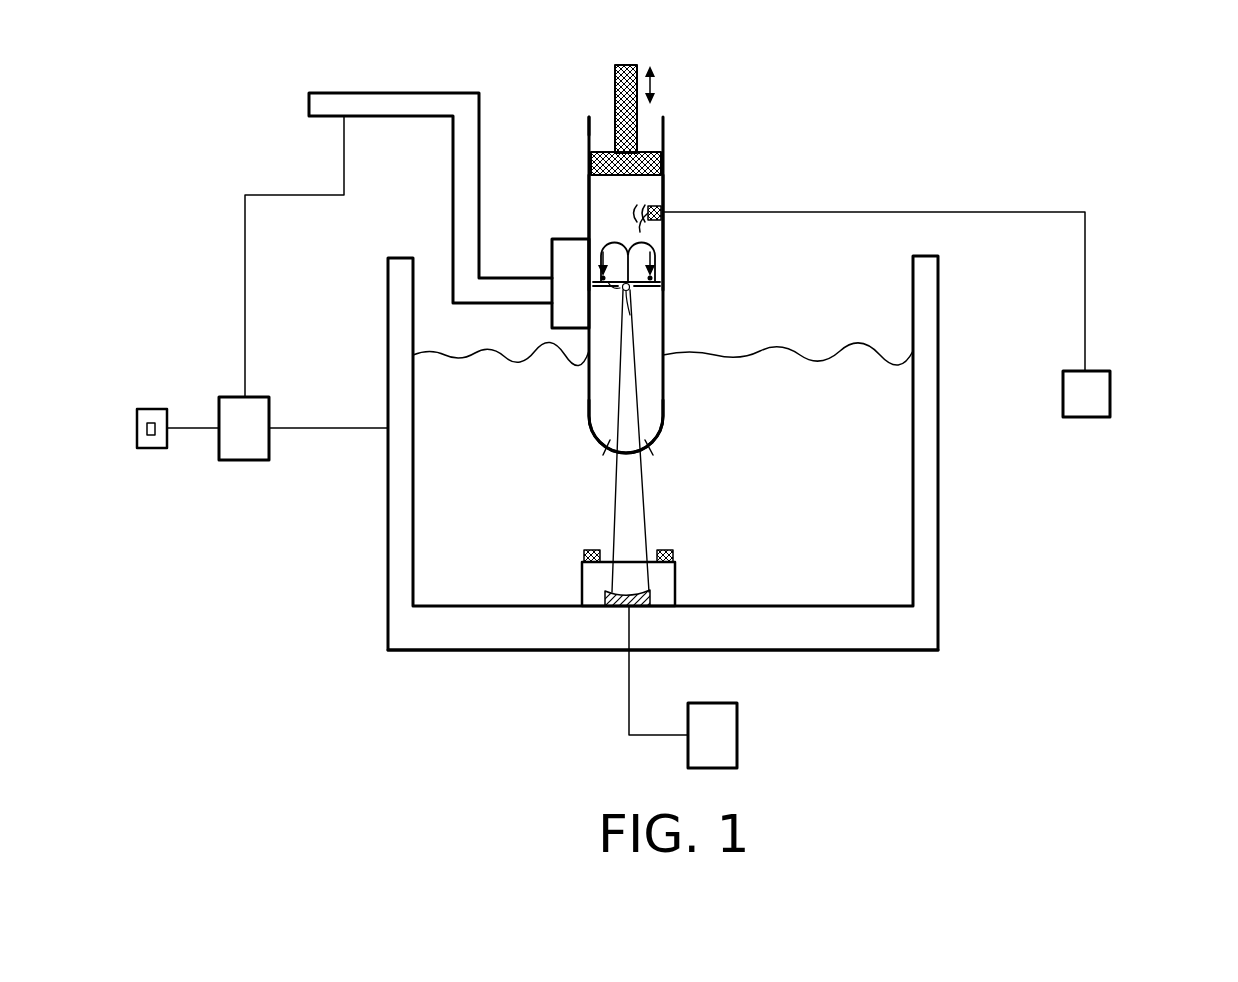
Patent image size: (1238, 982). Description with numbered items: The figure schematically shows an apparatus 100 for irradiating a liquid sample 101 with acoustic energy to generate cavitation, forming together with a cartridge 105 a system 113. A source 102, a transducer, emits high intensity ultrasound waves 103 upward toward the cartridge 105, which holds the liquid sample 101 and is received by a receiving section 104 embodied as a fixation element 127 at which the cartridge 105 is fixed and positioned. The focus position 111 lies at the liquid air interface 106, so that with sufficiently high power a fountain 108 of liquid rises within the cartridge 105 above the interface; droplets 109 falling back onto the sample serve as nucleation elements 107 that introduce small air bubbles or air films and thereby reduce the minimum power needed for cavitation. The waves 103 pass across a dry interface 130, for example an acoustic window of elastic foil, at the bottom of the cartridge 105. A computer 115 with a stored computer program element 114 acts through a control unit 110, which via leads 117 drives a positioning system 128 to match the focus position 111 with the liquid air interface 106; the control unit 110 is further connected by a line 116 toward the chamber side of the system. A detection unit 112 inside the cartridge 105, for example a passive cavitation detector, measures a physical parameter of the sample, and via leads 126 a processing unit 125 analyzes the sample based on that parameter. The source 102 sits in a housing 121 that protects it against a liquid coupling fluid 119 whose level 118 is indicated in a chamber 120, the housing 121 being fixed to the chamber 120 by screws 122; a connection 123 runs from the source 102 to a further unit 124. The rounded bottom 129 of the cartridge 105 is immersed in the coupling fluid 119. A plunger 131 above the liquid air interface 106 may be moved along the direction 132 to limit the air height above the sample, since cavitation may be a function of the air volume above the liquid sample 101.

The apparatus 100 is at (330, 634).
The liquid sample 101 is at (657, 392).
The source 102 is at (650, 603).
The high intensity ultrasound waves 103 is at (620, 495).
The receiving section 104 is at (551, 318).
The cartridge 105 is at (588, 131).
The liquid air interface 106 is at (660, 296).
The nucleation elements 107 is at (660, 250).
The fountain 108 is at (660, 235).
The droplets 109 is at (598, 270).
The control unit 110 is at (244, 461).
The focus position 111 is at (631, 315).
The detection unit 112 is at (660, 197).
The system 113 is at (1130, 176).
The computer program element 114 is at (151, 409).
The computer 115 is at (153, 449).
The connection line 116 is at (330, 429).
The leads 117 is at (244, 294).
The liquid level 118 is at (858, 356).
The liquid coupling fluid 119 is at (905, 563).
The chamber 120 is at (887, 651).
The housing 121 is at (676, 585).
The screws 122 is at (583, 556).
The connection line 123 is at (628, 709).
The measuring unit 124 is at (738, 735).
The processing unit 125 is at (1085, 418).
The leads 126 is at (945, 211).
The fixation element 127 is at (572, 239).
The positioning system 128 is at (452, 210).
The tube bottom 129 is at (663, 428).
The dry interface 130 is at (640, 450).
The plunger 131 is at (614, 80).
The direction 132 is at (656, 85).